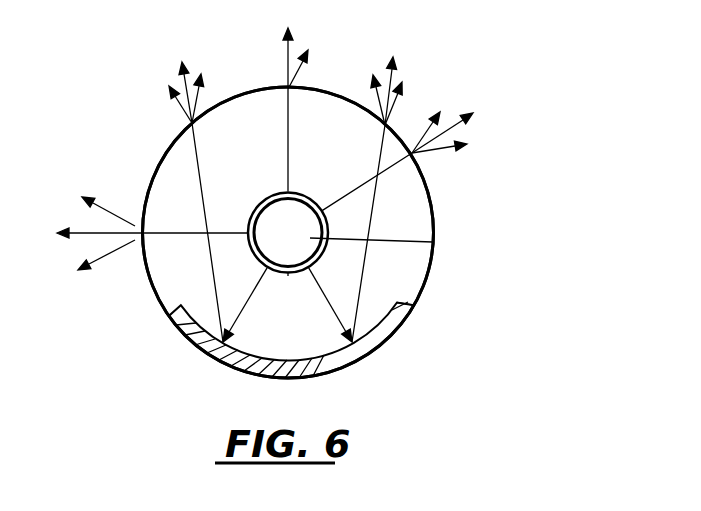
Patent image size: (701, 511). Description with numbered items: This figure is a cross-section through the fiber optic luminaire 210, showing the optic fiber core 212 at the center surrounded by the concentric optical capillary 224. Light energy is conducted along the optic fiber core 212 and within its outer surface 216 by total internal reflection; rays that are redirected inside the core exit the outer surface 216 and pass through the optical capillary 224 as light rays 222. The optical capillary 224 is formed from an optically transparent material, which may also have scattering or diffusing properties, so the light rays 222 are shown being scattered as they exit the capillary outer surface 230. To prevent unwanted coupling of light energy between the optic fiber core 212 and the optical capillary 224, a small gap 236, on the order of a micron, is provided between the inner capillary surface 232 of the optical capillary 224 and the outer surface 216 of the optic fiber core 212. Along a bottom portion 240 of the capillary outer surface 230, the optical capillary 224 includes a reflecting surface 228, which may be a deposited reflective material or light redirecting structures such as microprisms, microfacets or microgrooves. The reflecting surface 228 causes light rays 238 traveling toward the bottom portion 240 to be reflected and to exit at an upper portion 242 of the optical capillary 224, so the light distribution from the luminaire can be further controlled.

The fiber optic luminaire 210 is at (515, 179).
The optic fiber core 212 is at (433, 242).
The outer surface 216 is at (305, 195).
The light ray 222 is at (381, 72).
The optical capillary 224 is at (425, 220).
The reflecting surface 228 is at (315, 368).
The capillary outer surface 230 is at (162, 305).
The inner capillary surface 232 is at (289, 274).
The gap 236 is at (273, 197).
The light rays 238 is at (338, 320).
The bottom portion 240 is at (408, 305).
The upper portion 242 is at (390, 127).